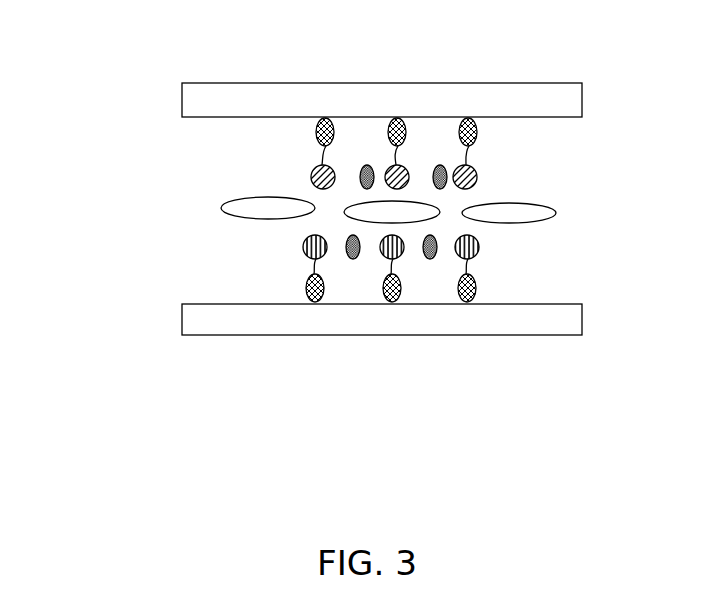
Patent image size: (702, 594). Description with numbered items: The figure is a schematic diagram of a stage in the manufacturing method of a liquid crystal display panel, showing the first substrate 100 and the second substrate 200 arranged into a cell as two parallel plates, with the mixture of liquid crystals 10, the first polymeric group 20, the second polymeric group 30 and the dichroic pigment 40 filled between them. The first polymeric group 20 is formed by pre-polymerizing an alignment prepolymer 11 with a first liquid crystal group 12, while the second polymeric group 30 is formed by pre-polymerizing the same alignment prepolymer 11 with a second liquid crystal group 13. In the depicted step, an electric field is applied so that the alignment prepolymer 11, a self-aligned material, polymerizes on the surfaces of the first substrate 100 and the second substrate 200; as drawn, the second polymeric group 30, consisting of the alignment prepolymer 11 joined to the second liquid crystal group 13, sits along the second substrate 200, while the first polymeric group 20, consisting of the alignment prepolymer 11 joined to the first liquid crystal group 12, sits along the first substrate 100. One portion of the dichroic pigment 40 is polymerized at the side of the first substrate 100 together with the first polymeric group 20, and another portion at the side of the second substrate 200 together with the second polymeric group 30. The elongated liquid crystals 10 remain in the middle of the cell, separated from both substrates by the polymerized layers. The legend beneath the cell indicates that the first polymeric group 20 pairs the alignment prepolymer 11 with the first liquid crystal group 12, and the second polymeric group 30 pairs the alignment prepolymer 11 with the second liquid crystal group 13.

The second substrate 200 is at (208, 93).
The first substrate 100 is at (208, 313).
The liquid crystals 10 is at (243, 208).
The alignment prepolymer 11 is at (470, 122).
The first liquid crystal group 12 is at (304, 252).
The second liquid crystal group 13 is at (316, 178).
The first polymeric group 20 is at (289, 365).
The second polymeric group 30 is at (320, 257).
The dichroic pigment 40 is at (367, 165).